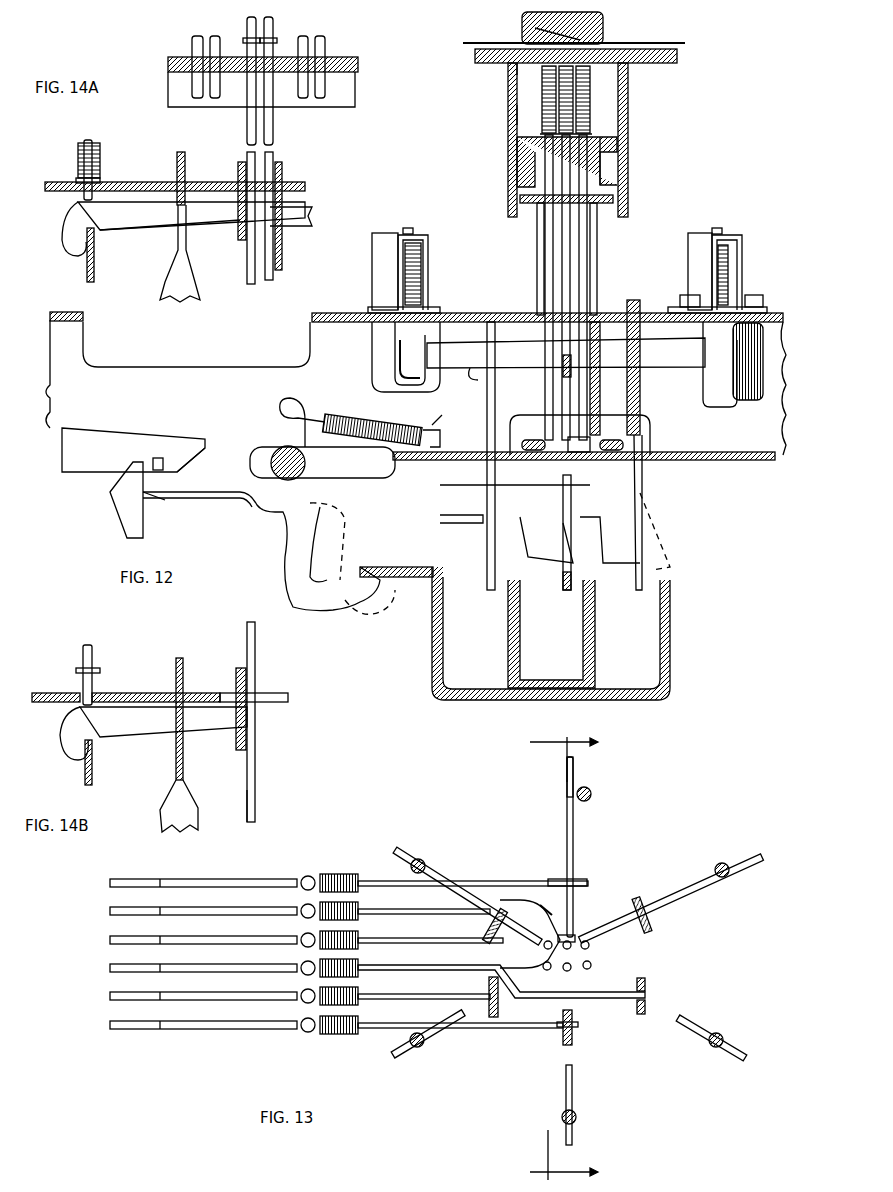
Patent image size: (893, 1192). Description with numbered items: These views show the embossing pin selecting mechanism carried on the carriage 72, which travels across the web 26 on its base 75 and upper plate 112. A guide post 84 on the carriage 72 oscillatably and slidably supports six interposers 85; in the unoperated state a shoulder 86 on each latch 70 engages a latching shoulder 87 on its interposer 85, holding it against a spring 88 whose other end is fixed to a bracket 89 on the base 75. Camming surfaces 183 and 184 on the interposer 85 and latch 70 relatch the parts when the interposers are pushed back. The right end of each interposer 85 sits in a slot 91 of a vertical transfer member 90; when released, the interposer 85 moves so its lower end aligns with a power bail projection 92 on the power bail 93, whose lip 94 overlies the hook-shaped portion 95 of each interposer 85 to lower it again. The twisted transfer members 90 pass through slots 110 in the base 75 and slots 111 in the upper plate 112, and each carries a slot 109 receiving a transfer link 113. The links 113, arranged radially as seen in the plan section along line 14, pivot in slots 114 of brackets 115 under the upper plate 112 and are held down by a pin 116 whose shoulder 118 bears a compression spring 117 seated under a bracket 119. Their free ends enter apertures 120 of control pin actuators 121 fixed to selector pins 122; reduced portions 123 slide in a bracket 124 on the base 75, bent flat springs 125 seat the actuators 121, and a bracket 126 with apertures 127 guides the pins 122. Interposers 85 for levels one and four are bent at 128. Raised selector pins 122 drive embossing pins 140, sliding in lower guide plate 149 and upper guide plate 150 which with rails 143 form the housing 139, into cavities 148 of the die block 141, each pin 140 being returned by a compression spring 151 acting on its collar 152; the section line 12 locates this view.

In FIG. 14A, the section line 12— 12 is at (55, 190).
In FIG. 13, the section line 14— 14 is at (577, 959).
In FIG. 12, the web 26 is at (685, 43).
In FIG. 12, the latch 70 is at (100, 432).
In FIG. 12, the carriage 72 is at (704, 475).
In FIG. 12, the base 75 is at (745, 462).
In FIG. 12, the guide post 84 is at (275, 440).
In FIG. 12, the interposer 85 is at (243, 495).
In FIG. 13, the interposer 85 is at (210, 998).
In FIG. 12, the shoulder 86 is at (157, 458).
In FIG. 12, the latching shoulder 87 is at (165, 500).
In FIG. 12, the spring 88 is at (345, 415).
In FIG. 13, the spring 88 is at (325, 1040).
In FIG. 12, the bracket 89 is at (430, 456).
In FIG. 14A, the vertical transfer member 90 is at (165, 290).
In FIG. 12, the vertical transfer member 90 is at (490, 592).
In FIG. 14B, the vertical transfer member 90 is at (165, 800).
In FIG. 13, the vertical transfer member 90 is at (505, 900).
In FIG. 12, the slot 91 is at (565, 575).
In FIG. 13, the slot 91 is at (557, 1027).
In FIG. 12, the power bail projection 92 is at (668, 590).
In FIG. 12, the power bail 93 is at (666, 704).
In FIG. 12, the lip 94 is at (390, 567).
In FIG. 12, the hook-shaped portion 95 is at (333, 610).
In FIG. 14A, the slot 109 is at (172, 228).
In FIG. 12, the slot 109 is at (478, 366).
In FIG. 12, the slot 110 is at (648, 450).
In FIG. 14A, the slot 111 is at (186, 178).
In FIG. 12, the slot 111 is at (618, 310).
In FIG. 12, the upper plate 112 is at (340, 313).
In FIG. 14B, the upper plate 112 is at (50, 695).
In FIG. 14A, the transfer link 113 is at (305, 208).
In FIG. 12, the transfer link 113 is at (490, 372).
In FIG. 14B, the transfer link 113 is at (160, 734).
In FIG. 13, the transfer link 113 is at (398, 856).
In FIG. 14A, the pivot slot 114 is at (100, 240).
In FIG. 12, the pivot slot 114 is at (395, 372).
In FIG. 14B, the pivot slot 114 is at (70, 724).
In FIG. 12, the bracket 115 is at (372, 335).
In FIG. 14A, the pin 116 is at (86, 145).
In FIG. 12, the pin 116 is at (718, 228).
In FIG. 14B, the pin 116 is at (93, 682).
In FIG. 13, the pin 116 is at (418, 858).
In FIG. 14A, the compression spring 117 is at (100, 158).
In FIG. 12, the compression spring 117 is at (728, 262).
In FIG. 14A, the shoulder 118 is at (78, 180).
In FIG. 14B, the shoulder 118 is at (78, 670).
In FIG. 12, the bracket 119 is at (742, 238).
In FIG. 14A, the aperture 120 is at (238, 222).
In FIG. 12, the aperture 120 is at (563, 362).
In FIG. 14A, the control pin actuator 121 is at (268, 270).
In FIG. 12, the control pin actuator 121 is at (537, 305).
In FIG. 14B, the control pin actuator 121 is at (236, 680).
In FIG. 13, the control pin actuator 121 is at (592, 966).
In FIG. 14A, the selector pin 122 is at (272, 125).
In FIG. 12, the selector pin 122 is at (582, 240).
In FIG. 14B, the selector pin 122 is at (255, 662).
In FIG. 13, the selector pin 122 is at (576, 930).
In FIG. 12, the reduced portion 123 is at (535, 448).
In FIG. 14B, the reduced portion 123 is at (255, 800).
In FIG. 12, the bracket 124 is at (428, 432).
In FIG. 12, the bent flat spring 125 is at (578, 450).
In FIG. 12, the bracket 126 is at (598, 234).
In FIG. 12, the aperture 127 is at (590, 200).
In FIG. 13, the bend 128 is at (505, 955).
In FIG. 12, the embossing pin housing 139 is at (640, 94).
In FIG. 14A, the embossing pin 140 is at (195, 88).
In FIG. 12, the embossing pin 140 is at (530, 162).
In FIG. 12, the die block 141 is at (603, 26).
In FIG. 12, the rail 143 is at (510, 113).
In FIG. 12, the cavity 148 is at (535, 30).
In FIG. 12, the lower guide plate 149 is at (602, 138).
In FIG. 12, the upper guide plate 150 is at (515, 72).
In FIG. 12, the compression spring 151 is at (545, 90).
In FIG. 12, the collar 152 is at (545, 133).
In FIG. 12, the camming surface 183 is at (112, 486).
In FIG. 12, the camming surface 184 is at (208, 447).